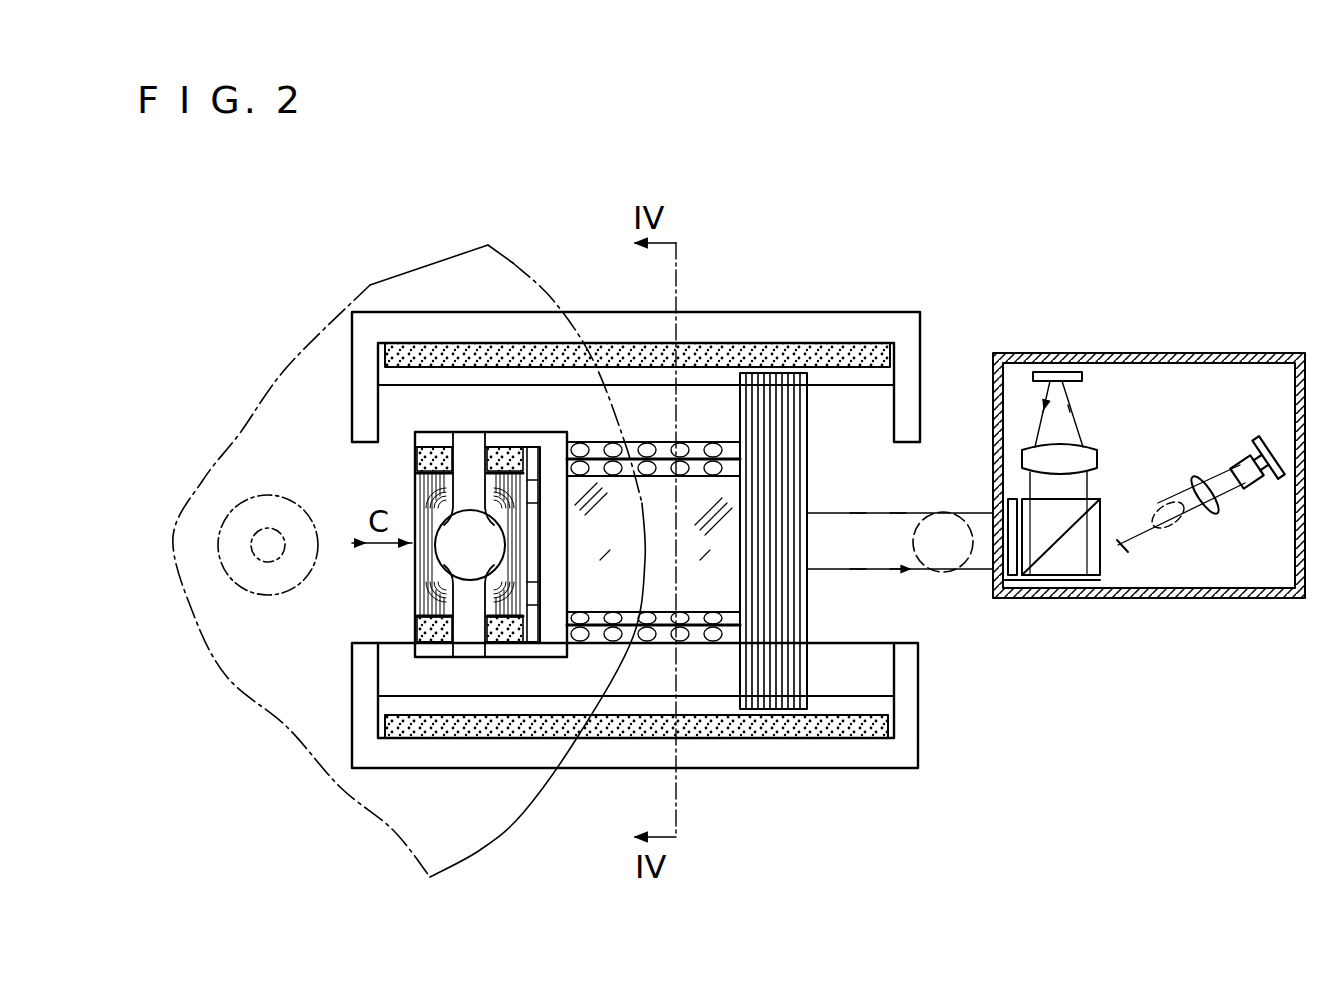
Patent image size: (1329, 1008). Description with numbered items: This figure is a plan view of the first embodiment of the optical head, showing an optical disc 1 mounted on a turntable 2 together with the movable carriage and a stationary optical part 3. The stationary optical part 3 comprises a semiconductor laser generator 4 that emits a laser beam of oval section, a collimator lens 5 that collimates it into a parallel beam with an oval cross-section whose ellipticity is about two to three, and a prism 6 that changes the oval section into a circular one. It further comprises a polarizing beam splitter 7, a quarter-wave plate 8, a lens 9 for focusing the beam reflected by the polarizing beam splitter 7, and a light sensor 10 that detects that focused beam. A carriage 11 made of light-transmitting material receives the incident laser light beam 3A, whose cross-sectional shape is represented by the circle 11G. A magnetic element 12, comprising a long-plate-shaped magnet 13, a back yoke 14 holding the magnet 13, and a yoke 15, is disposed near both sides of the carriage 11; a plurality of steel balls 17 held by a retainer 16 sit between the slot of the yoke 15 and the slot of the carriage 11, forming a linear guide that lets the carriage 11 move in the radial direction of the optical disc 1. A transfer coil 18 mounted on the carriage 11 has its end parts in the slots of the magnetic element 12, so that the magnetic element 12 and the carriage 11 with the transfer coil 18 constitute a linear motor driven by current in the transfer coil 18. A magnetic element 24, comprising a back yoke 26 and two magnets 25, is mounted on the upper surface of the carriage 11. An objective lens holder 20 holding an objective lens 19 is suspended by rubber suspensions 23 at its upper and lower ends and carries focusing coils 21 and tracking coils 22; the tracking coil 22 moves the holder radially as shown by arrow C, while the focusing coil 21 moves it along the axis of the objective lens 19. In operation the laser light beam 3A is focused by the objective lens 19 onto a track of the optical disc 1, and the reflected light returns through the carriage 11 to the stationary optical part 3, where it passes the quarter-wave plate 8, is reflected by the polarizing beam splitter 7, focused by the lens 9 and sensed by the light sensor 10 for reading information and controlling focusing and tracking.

The optical disc 1 is at (545, 292).
The turntable 2 is at (263, 537).
The stationary optical part 3 is at (1130, 352).
The incident laser light beam 3A is at (866, 516).
The semiconductor laser generator 4 is at (1257, 485).
The collimator lens 5 is at (1203, 472).
The prism 6 is at (1137, 560).
The polarizing beam splitter 7 is at (1068, 575).
The quarter-wave plate 8 is at (1010, 580).
The lens 9 is at (1088, 447).
The light sensor 10 is at (1047, 370).
The carriage 11 is at (702, 625).
The circle 11G is at (952, 557).
The magnetic element 12 is at (713, 311).
The magnet 13 is at (743, 352).
The back yoke 14 is at (797, 318).
The yoke 15 is at (838, 402).
The retainer 16 is at (713, 637).
The steel balls 17 is at (640, 640).
The transfer coil 18 is at (807, 670).
The objective lens 19 is at (414, 570).
The objective lens holder 20 is at (415, 507).
The focusing coil 21 is at (433, 618).
The tracking coil 22 is at (417, 597).
The rubber suspension 23 is at (467, 440).
The magnetic element 24 is at (484, 428).
The magnet 25 is at (503, 443).
The back yoke 26 is at (522, 440).